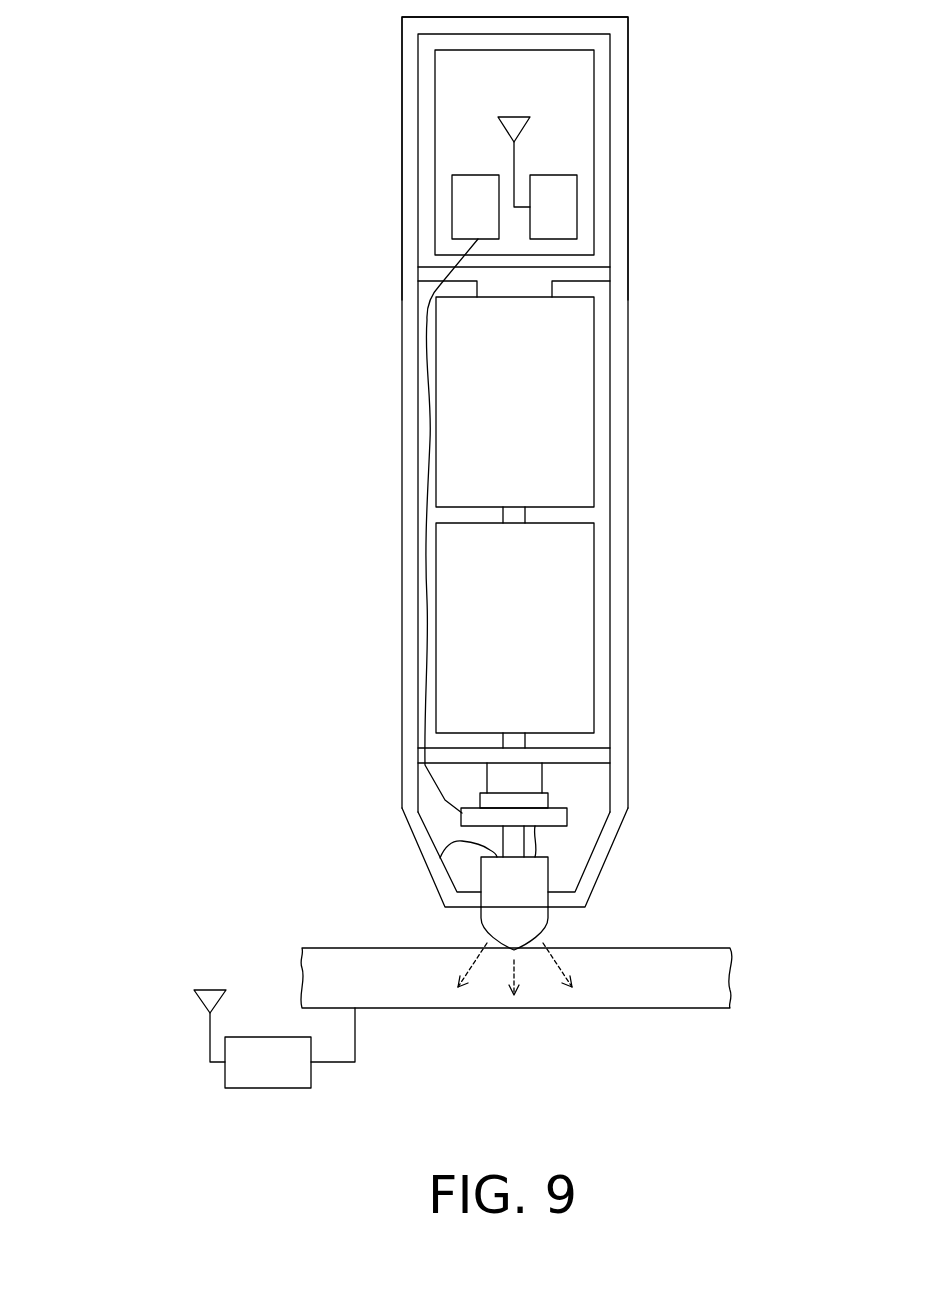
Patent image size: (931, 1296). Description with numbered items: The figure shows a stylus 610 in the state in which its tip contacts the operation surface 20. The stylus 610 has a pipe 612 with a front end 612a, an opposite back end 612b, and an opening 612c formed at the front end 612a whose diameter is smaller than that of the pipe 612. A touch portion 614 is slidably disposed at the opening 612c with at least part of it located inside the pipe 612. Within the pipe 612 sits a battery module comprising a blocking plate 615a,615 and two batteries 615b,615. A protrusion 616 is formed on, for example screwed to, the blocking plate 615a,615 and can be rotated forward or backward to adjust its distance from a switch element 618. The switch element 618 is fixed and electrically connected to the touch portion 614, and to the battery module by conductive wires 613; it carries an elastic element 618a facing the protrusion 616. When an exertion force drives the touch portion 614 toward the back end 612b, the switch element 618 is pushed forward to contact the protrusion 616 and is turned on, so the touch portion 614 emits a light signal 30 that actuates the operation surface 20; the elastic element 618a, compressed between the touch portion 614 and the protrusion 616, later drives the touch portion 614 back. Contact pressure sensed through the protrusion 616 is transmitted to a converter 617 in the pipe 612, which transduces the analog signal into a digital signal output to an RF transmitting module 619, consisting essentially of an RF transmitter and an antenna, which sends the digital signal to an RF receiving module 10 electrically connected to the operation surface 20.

The RF receiving module 10 is at (253, 1075).
The operation surface 20 is at (703, 982).
The light signal 30 is at (515, 980).
The stylus 610 is at (370, 428).
The pipe 612 is at (618, 406).
The front end 612a is at (410, 875).
The back end 612b is at (645, 30).
The opening 612c is at (487, 925).
The conductive wires 613 is at (435, 862).
The touch portion 614 is at (523, 922).
The blocking plate of battery module 615a,615 is at (596, 758).
The battery of battery module 615b,615 is at (560, 648).
The protrusion 616 is at (508, 777).
The converter 617 is at (473, 213).
The switch element 618 is at (543, 817).
The elastic element 618a is at (533, 800).
The RF transmitting module 619 is at (555, 210).